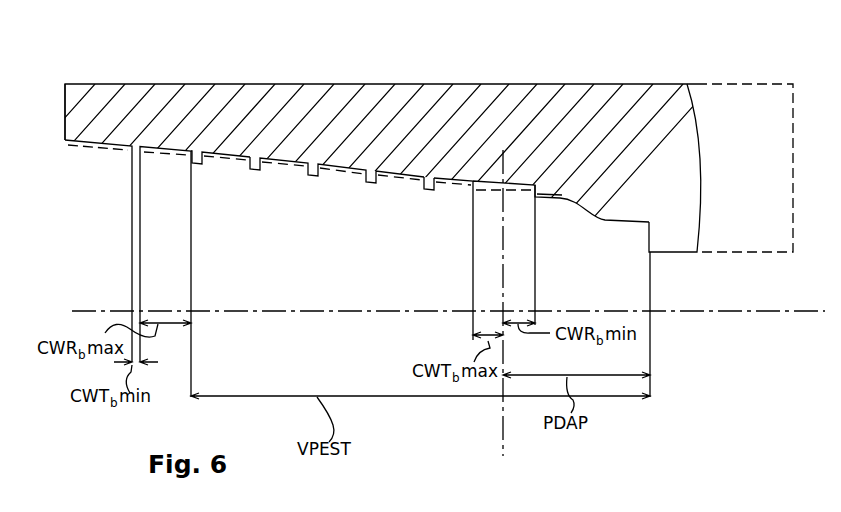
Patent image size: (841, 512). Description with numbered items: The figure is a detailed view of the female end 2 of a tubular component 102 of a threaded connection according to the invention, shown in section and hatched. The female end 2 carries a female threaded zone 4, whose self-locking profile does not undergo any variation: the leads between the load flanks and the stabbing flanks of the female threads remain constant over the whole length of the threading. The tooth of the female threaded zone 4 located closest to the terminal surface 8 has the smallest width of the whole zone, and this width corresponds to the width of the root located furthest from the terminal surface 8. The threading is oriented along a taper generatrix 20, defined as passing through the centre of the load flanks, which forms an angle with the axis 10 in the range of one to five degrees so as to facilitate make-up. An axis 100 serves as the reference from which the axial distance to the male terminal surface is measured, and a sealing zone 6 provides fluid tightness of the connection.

The female end 2 is at (500, 103).
The female threaded zone 4 is at (313, 148).
The sealing zone 6 is at (602, 212).
The terminal surface 8 is at (73, 113).
The axis 10 is at (365, 309).
The taper generatrix 20 is at (427, 178).
The axis 100 is at (503, 228).
The tubular component 102 is at (729, 220).